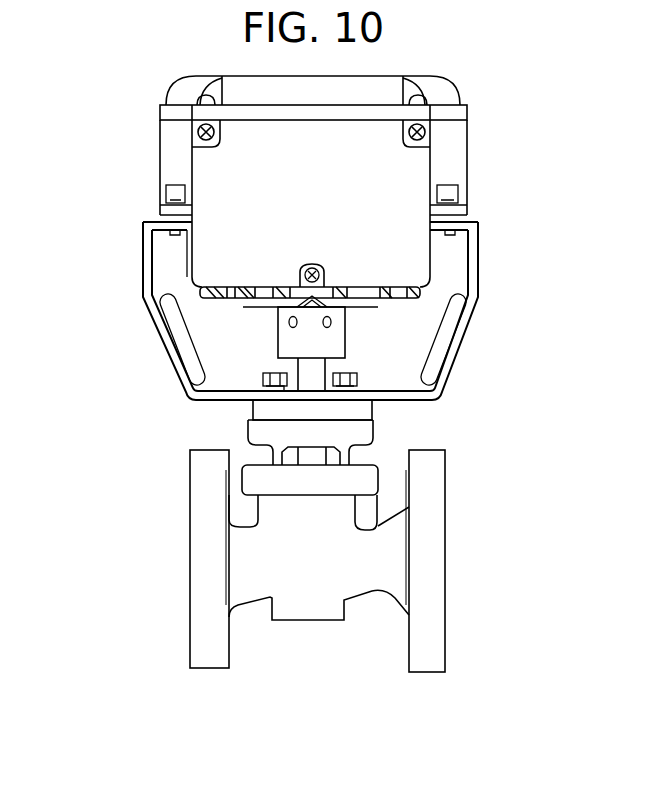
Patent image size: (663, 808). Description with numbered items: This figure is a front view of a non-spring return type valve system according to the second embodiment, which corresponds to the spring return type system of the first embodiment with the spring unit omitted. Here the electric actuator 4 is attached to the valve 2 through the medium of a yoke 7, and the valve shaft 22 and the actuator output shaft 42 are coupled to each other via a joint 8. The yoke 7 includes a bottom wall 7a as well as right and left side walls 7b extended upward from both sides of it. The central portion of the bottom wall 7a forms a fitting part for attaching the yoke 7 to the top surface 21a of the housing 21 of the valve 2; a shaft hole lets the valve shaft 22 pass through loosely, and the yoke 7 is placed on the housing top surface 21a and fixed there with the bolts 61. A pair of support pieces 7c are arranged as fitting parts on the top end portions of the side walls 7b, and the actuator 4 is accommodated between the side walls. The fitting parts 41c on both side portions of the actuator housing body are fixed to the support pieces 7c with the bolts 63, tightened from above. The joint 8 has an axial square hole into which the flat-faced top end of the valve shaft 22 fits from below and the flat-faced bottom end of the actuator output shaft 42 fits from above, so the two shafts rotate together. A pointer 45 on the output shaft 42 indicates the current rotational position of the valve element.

The valve 2 is at (282, 561).
The electric actuator 4 is at (143, 138).
The yoke 7 is at (312, 344).
The bottom wall 7a is at (206, 400).
The side walls 7b is at (147, 302).
The support pieces 7c is at (150, 222).
The joint 8 is at (276, 339).
The housing 21 is at (301, 605).
The top surface 21a is at (385, 400).
The valve shaft 22 is at (327, 368).
The fitting parts 41c is at (163, 211).
The actuator output shaft 42 is at (347, 333).
The pointer 45 is at (328, 301).
The bolts 61 is at (262, 378).
The bolts 63 is at (166, 187).